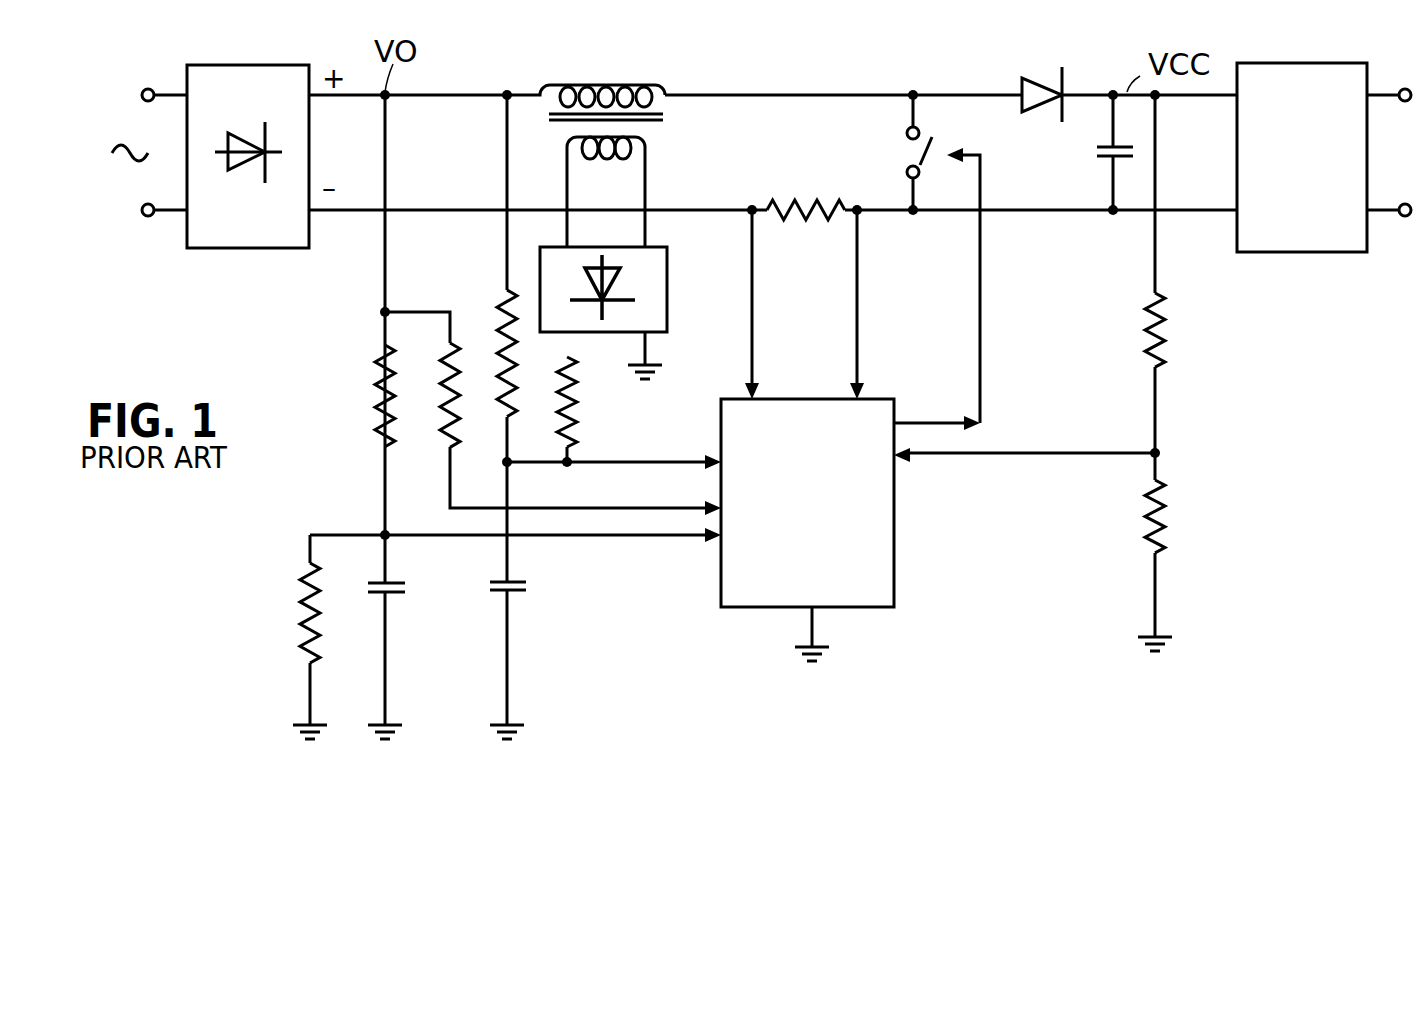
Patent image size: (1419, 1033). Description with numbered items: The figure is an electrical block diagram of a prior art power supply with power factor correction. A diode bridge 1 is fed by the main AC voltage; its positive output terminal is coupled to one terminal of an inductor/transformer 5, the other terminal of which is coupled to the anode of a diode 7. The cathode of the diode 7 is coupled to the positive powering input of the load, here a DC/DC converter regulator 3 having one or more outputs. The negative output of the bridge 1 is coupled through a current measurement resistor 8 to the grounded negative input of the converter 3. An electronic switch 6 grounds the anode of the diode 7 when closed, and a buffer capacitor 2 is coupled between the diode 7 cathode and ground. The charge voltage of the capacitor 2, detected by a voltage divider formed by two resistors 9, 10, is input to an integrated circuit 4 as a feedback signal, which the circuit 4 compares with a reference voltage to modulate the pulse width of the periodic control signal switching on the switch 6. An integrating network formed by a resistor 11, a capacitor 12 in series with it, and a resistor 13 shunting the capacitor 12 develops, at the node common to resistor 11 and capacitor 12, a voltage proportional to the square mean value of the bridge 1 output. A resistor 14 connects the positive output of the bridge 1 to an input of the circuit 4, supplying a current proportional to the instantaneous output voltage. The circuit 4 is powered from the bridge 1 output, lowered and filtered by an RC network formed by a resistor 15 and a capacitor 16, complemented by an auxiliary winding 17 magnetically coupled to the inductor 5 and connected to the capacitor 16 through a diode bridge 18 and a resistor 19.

The diode bridge 1 is at (258, 248).
The buffer capacitor 2 is at (1098, 162).
The DC/DC converter regulator 3 is at (1346, 253).
The integrated circuit 4 is at (896, 518).
The inductor/transformer 5 is at (642, 83).
The electronic switch 6 is at (914, 156).
The diode 7 is at (1026, 78).
The current measurement resistor 8 is at (824, 200).
The resistor 9 is at (1165, 324).
The resistor 10 is at (1167, 486).
The resistor 11 is at (375, 388).
The capacitor 12 is at (394, 596).
The resistor 13 is at (298, 612).
The resistor 14 is at (440, 414).
The resistor 15 is at (496, 308).
The capacitor 16 is at (516, 594).
The auxiliary winding 17 is at (648, 145).
The diode bridge 18 is at (667, 275).
The resistor 19 is at (576, 410).